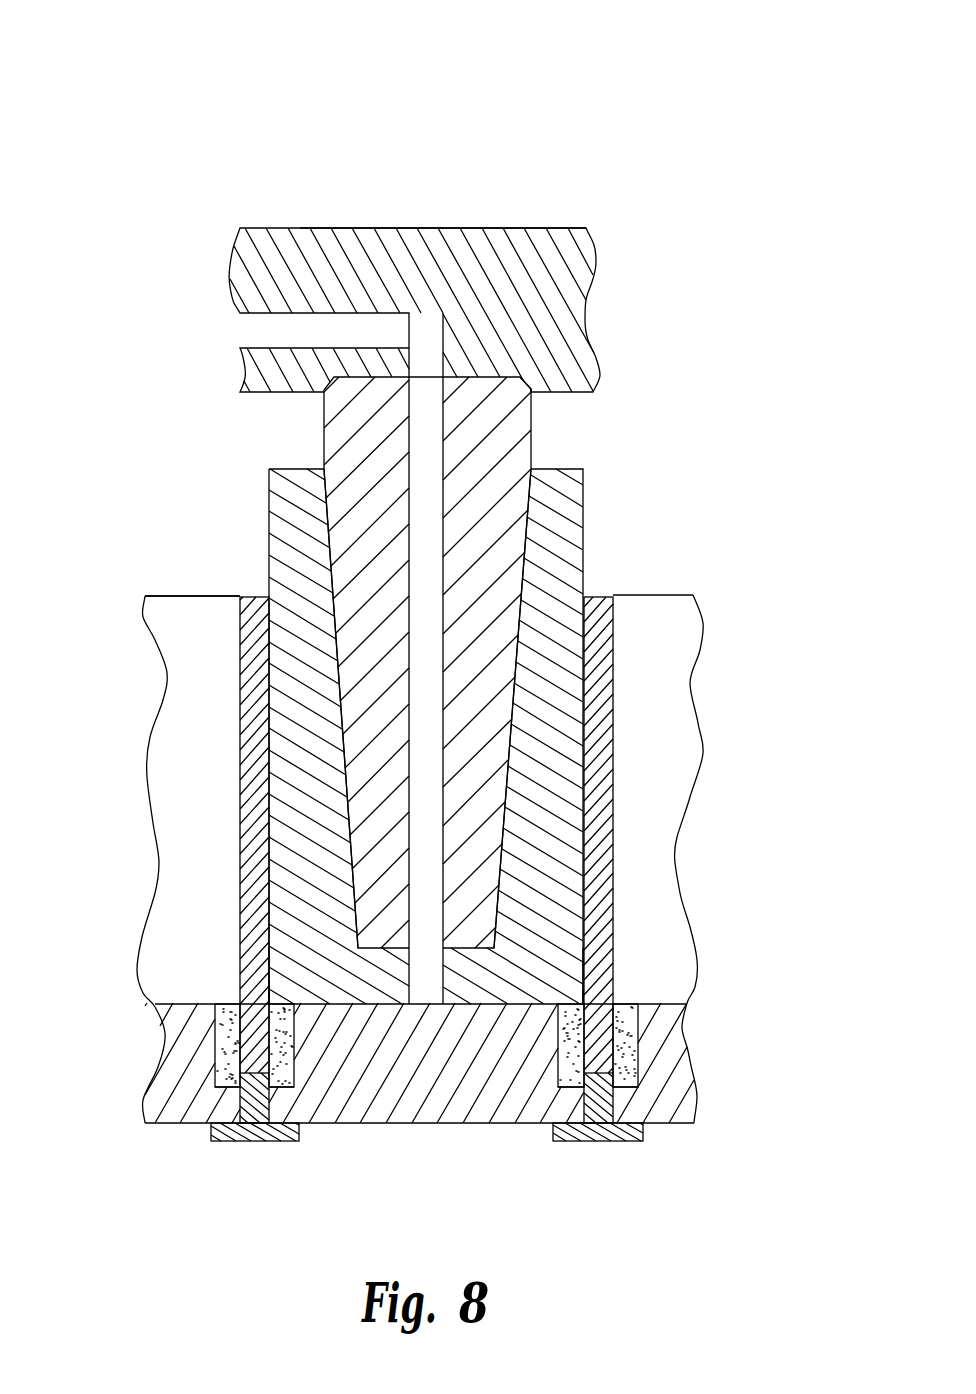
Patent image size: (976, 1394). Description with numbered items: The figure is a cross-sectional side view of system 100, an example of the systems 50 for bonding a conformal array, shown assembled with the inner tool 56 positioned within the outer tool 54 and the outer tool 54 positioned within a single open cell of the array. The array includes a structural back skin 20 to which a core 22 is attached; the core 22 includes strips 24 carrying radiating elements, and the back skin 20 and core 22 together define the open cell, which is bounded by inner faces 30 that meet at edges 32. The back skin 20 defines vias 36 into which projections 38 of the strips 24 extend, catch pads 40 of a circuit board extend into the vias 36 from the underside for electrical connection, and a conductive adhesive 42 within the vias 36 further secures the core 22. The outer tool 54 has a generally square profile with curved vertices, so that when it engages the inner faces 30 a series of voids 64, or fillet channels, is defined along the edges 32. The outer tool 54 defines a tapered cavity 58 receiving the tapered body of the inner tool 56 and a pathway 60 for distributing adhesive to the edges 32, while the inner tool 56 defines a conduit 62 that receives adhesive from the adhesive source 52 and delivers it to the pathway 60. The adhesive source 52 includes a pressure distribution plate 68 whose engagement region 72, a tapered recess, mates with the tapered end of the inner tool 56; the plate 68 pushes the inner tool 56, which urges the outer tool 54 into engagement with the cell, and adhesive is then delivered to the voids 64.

The structural back skin 20 is at (420, 1128).
The core 22 is at (125, 810).
The strips 24 is at (250, 593).
The inner faces 30 is at (270, 835).
The edges 32 is at (277, 1004).
The vias 36 is at (232, 1068).
The projections 38 is at (280, 1030).
The catch pads 40 is at (262, 1141).
The conductive adhesive 42 is at (628, 1062).
The system 50 is at (127, 90).
The adhesive source 52 is at (434, 225).
The outer tool 54 is at (584, 500).
The inner tool 56 is at (535, 436).
The cavity 58 is at (583, 662).
The pathway 60 is at (417, 1004).
The conduit 62 is at (443, 540).
The voids 64 is at (272, 992).
The pressure distribution plate 68 is at (532, 226).
The engagement region 72 is at (490, 392).
The system 100 is at (290, 163).